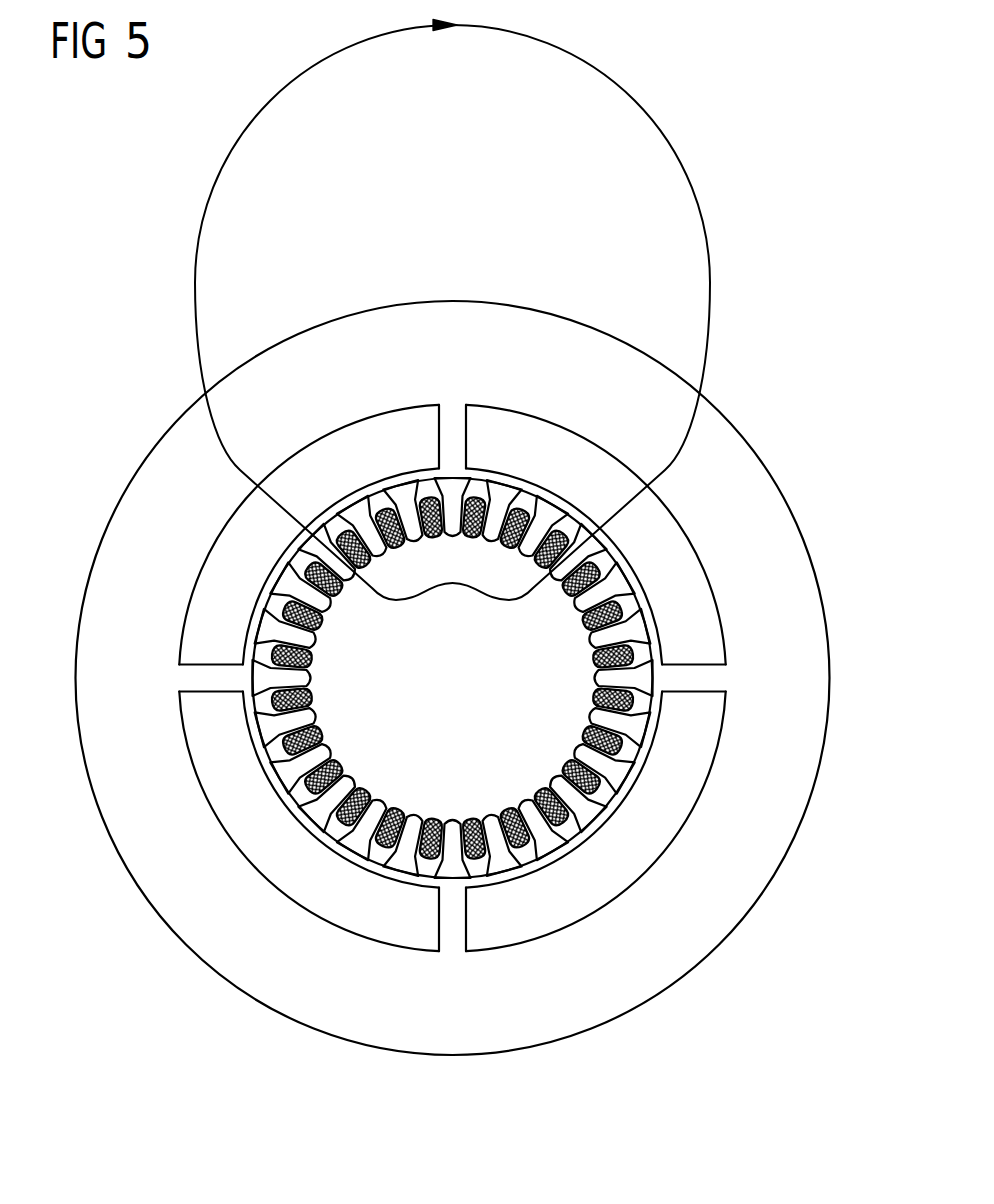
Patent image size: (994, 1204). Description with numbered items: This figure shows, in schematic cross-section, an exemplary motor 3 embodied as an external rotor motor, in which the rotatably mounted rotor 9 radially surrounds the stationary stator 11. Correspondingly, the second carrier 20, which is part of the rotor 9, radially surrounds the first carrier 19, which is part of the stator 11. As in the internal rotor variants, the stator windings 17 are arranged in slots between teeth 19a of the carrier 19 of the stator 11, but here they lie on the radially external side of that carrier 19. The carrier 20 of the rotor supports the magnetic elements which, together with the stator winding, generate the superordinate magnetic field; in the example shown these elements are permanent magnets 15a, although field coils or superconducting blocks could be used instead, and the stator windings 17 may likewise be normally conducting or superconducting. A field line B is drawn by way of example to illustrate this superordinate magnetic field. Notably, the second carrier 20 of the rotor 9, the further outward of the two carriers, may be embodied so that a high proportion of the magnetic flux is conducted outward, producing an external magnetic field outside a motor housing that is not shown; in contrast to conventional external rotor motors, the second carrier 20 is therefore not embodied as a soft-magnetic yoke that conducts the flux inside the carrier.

The motor 3 is at (118, 212).
The rotor 9 is at (160, 425).
The stator 11 is at (454, 452).
The permanent magnets 15a is at (342, 883).
The stator windings 17 is at (640, 590).
The first carrier 19 is at (480, 784).
The teeth 19a is at (628, 628).
The second carrier 20 is at (466, 1023).
The field line B is at (508, 34).